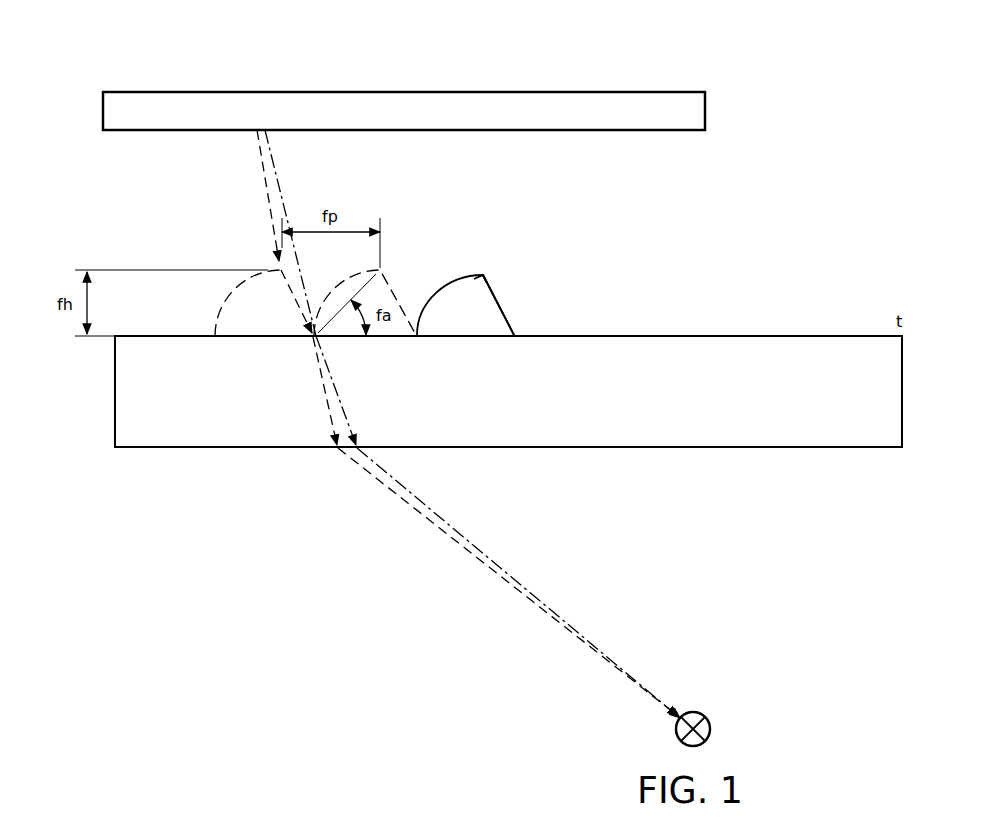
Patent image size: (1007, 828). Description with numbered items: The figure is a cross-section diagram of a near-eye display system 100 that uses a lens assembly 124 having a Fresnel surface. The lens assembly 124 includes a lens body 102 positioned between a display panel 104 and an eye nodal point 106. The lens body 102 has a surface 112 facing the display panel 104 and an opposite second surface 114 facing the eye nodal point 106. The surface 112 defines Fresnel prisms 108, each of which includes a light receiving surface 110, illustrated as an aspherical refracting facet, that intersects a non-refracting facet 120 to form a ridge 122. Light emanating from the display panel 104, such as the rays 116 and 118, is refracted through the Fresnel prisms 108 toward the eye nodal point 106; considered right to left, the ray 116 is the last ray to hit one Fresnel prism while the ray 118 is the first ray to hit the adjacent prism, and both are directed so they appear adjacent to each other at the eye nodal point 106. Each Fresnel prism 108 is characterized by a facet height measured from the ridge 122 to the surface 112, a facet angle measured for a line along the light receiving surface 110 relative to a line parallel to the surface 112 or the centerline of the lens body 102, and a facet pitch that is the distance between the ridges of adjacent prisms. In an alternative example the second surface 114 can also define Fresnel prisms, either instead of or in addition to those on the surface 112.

The near-eye display system 100 is at (838, 68).
The lens body 102 is at (713, 403).
The display panel 104 is at (102, 108).
The eye nodal point 106 is at (693, 710).
The Fresnel prisms 108 is at (468, 338).
The light receiving surface 110 is at (440, 290).
The surface 112 is at (707, 335).
The second surface 114 is at (813, 449).
The ray 116 is at (283, 186).
The ray 118 is at (270, 196).
The non-refracting facet 120 is at (503, 307).
The ridge 122 is at (484, 272).
The lens assembly 124 is at (816, 311).